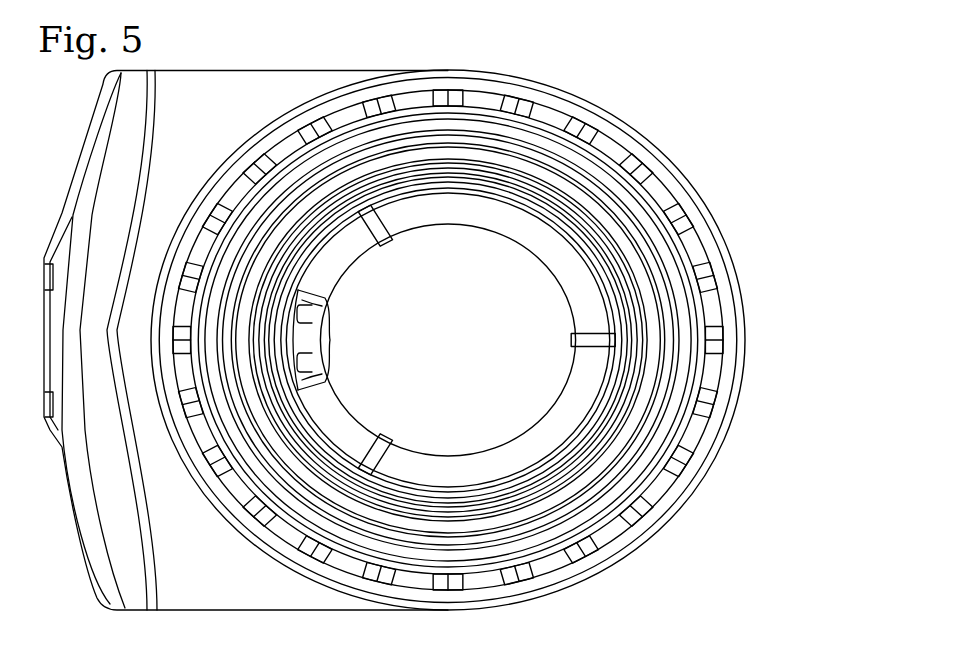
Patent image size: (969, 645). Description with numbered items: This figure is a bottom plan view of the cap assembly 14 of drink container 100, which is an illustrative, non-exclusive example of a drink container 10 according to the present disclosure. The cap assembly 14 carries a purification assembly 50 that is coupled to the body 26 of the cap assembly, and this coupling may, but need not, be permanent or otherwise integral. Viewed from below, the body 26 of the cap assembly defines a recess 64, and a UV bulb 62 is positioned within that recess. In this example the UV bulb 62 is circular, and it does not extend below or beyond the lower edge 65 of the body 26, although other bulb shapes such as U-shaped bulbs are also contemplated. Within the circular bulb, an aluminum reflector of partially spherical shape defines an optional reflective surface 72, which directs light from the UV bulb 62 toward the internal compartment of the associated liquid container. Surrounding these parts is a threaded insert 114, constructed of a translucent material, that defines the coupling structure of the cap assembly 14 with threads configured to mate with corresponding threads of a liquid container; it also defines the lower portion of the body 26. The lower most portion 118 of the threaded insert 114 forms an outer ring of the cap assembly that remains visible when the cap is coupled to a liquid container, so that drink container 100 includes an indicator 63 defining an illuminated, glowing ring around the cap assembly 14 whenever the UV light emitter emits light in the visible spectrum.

The drink container 10 is at (807, 95).
The cap assembly 14 is at (772, 160).
The body 26 is at (285, 615).
The purification assembly 50 is at (728, 200).
The UV bulb 62 is at (520, 436).
The indicator 63 is at (603, 577).
The recess 64 is at (708, 438).
The lower edge 65 is at (675, 492).
The reflective surface 72 is at (460, 341).
The drink container 100 is at (690, 100).
The threaded insert 114 is at (745, 383).
The lower most portion 118 is at (652, 538).